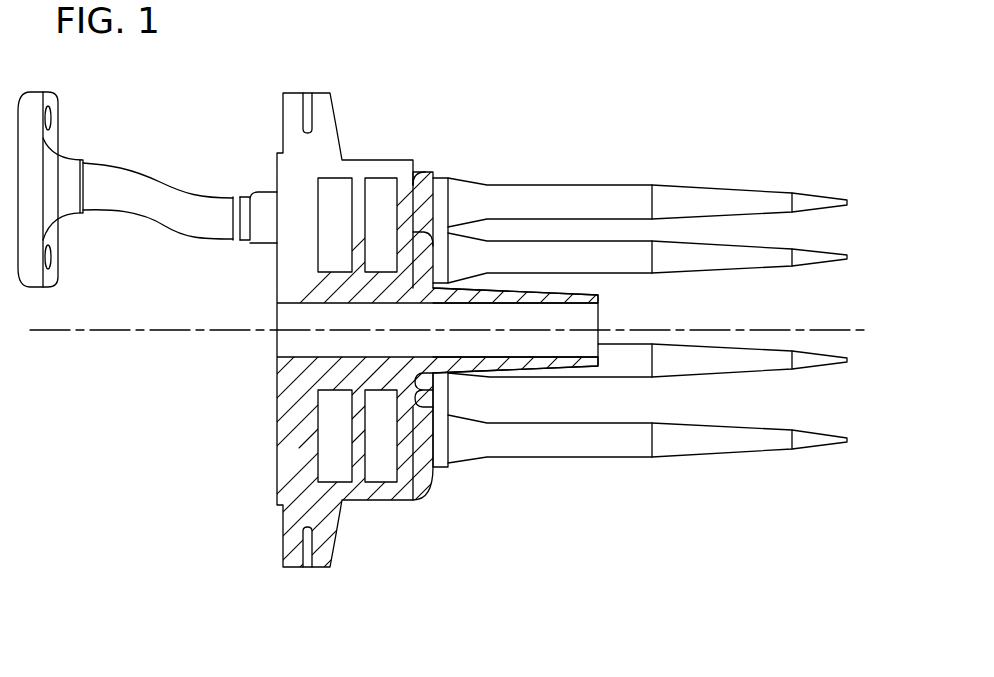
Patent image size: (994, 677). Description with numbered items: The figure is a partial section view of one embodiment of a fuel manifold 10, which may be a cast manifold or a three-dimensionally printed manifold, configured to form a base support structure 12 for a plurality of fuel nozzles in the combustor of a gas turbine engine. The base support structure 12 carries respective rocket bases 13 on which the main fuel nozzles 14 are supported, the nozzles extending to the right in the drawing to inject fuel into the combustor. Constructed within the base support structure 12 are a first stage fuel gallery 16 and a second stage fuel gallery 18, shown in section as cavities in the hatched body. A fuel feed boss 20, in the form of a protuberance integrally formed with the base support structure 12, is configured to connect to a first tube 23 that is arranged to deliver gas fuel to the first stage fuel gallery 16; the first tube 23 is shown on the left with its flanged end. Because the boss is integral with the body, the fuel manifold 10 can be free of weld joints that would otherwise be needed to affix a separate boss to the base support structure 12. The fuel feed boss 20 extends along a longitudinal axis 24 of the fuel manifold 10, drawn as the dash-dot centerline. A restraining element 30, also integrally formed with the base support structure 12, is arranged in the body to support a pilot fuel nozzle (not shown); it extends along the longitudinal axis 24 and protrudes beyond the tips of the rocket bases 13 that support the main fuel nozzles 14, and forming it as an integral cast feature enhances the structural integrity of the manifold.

The manifold 10 is at (590, 56).
The base support structure 12 is at (253, 393).
The rocket bases 13 is at (423, 257).
The main fuel nozzles 14 is at (745, 174).
The first stage fuel gallery 16 is at (382, 197).
The second stage fuel gallery 18 is at (333, 237).
The fuel feed boss 20 is at (260, 202).
The first tube 23 is at (130, 183).
The longitudinal axis 24 is at (60, 332).
The restraining element 30 is at (580, 320).